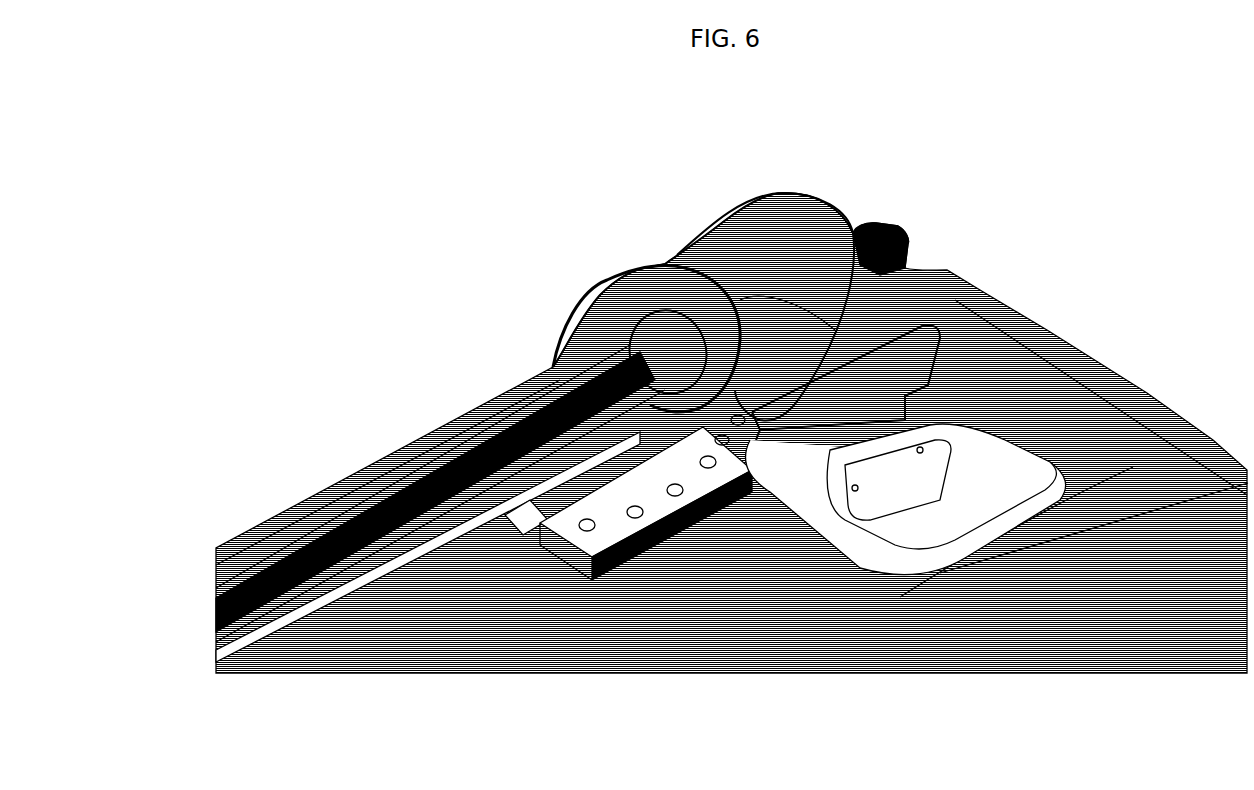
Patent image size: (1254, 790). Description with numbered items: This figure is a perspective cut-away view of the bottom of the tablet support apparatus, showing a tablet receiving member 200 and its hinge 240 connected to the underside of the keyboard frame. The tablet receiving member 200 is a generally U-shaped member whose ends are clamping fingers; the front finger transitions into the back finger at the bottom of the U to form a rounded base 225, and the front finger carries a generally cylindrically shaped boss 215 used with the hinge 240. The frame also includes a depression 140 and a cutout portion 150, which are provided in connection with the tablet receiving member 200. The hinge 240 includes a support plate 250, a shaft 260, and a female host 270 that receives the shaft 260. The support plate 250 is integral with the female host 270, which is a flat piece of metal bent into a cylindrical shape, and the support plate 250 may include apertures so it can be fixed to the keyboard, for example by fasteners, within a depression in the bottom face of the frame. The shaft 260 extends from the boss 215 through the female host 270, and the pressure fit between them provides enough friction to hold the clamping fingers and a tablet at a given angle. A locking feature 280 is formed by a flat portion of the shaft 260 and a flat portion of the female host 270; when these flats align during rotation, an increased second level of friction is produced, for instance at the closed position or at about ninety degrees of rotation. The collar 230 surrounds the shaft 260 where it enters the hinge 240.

The tablet receiving member 200 is at (635, 245).
The rounded base 225 is at (770, 263).
The boss 215 is at (820, 367).
The cutout portion 150 is at (880, 357).
The depression 140 is at (980, 448).
The collar 230 is at (598, 316).
The female host 270 is at (640, 440).
The locking feature 280 is at (524, 520).
The shaft 260 is at (520, 517).
The support plate 250 is at (647, 490).
The hinge 240 is at (748, 542).